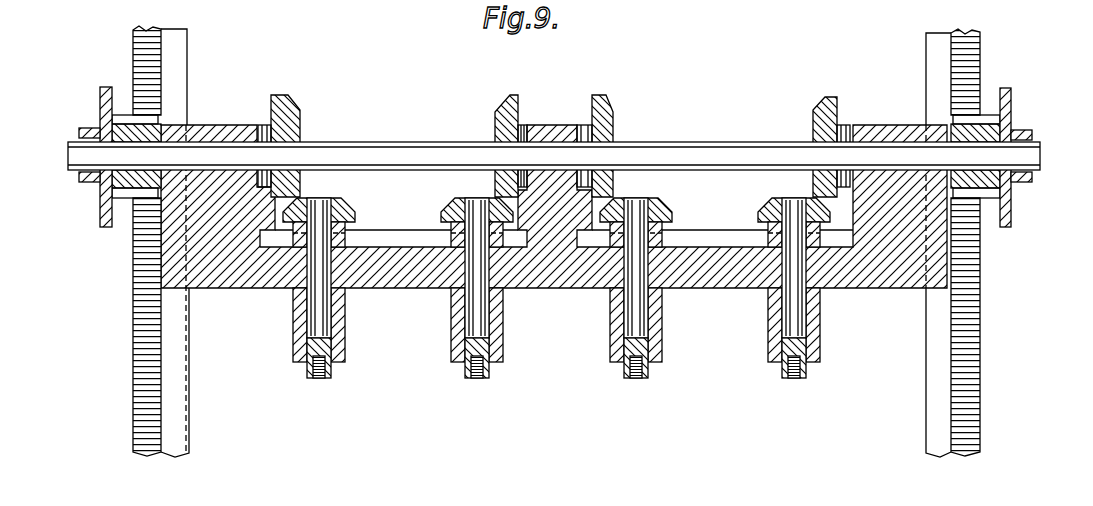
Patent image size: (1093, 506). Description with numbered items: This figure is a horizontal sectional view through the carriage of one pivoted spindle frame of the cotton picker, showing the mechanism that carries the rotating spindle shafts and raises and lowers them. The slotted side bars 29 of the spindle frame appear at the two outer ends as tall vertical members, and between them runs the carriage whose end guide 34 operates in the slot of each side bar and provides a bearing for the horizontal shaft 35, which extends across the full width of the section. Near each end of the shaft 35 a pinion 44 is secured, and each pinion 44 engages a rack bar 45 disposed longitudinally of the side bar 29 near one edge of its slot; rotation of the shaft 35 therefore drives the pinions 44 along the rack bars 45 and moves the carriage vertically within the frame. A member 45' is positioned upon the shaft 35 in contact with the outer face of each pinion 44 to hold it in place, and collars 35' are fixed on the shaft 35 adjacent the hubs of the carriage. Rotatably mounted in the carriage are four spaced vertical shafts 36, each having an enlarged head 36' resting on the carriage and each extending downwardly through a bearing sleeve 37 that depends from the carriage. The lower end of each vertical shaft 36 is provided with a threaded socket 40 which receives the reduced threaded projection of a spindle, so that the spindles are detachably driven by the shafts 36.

The slotted side bar 29 is at (175, 57).
The guide 34 is at (161, 243).
The shaft 35 is at (554, 140).
The collar 35' is at (554, 130).
The vertical shaft 36 is at (584, 288).
The head of vertical shaft 36' is at (556, 200).
The bearing sleeve 37 is at (293, 333).
The threaded socket 40 is at (319, 380).
The pinion 44 is at (150, 118).
The rack bar 45 is at (555, 320).
The end flange 45' is at (567, 144).